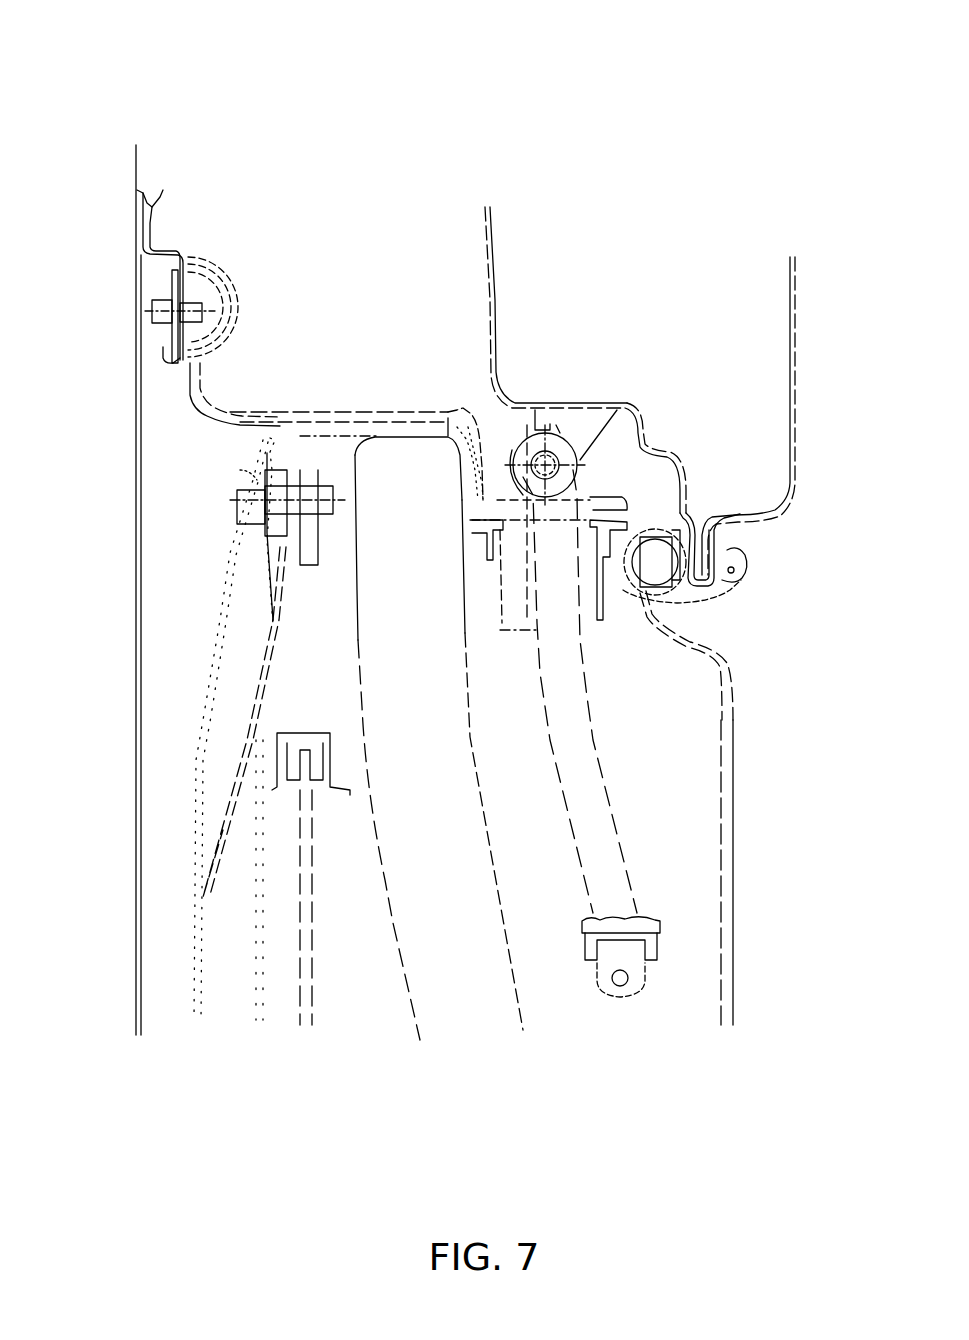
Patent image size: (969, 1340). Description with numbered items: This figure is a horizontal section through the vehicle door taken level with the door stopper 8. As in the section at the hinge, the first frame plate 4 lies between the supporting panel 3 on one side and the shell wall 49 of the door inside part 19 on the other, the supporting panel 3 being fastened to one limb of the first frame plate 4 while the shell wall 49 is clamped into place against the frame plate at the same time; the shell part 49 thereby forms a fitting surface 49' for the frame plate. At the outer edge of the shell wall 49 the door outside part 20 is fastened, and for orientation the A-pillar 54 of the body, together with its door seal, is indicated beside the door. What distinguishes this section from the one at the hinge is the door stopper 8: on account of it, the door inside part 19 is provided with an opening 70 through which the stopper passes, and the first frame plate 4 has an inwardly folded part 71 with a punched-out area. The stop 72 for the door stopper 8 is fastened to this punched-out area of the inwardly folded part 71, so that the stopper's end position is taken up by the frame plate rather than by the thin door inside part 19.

The supporting panel 3 is at (408, 619).
The first frame plate 4 is at (278, 435).
The door stopper 8 is at (557, 673).
The door inside part 19 is at (718, 673).
The door outside part 20 is at (131, 354).
The shell wall 49 is at (356, 250).
The fitting surface 49' is at (549, 256).
The A-pillar 54 is at (694, 416).
The opening 70 is at (478, 473).
The inwardly folded part 71 is at (481, 525).
The stop 72 is at (497, 627).